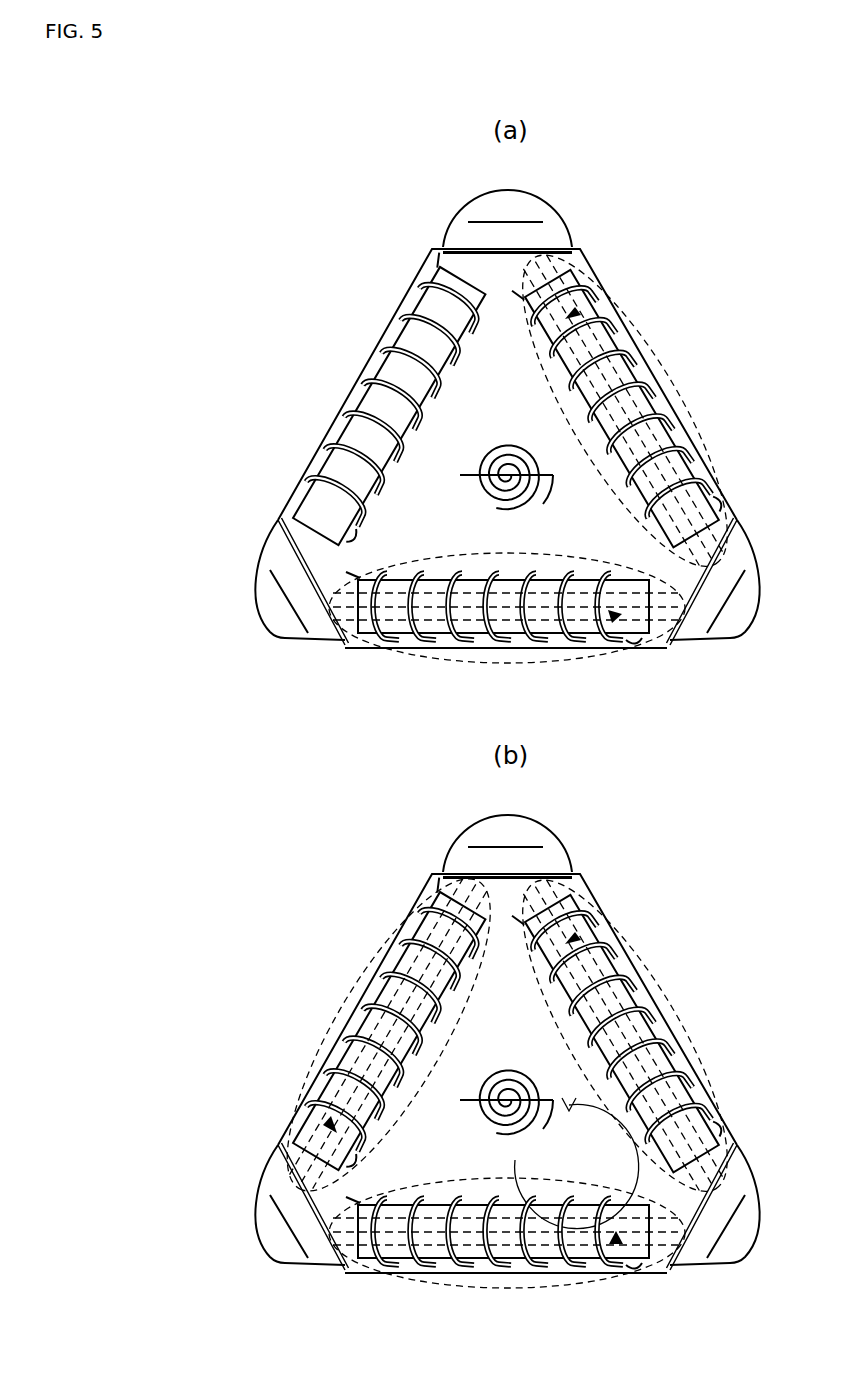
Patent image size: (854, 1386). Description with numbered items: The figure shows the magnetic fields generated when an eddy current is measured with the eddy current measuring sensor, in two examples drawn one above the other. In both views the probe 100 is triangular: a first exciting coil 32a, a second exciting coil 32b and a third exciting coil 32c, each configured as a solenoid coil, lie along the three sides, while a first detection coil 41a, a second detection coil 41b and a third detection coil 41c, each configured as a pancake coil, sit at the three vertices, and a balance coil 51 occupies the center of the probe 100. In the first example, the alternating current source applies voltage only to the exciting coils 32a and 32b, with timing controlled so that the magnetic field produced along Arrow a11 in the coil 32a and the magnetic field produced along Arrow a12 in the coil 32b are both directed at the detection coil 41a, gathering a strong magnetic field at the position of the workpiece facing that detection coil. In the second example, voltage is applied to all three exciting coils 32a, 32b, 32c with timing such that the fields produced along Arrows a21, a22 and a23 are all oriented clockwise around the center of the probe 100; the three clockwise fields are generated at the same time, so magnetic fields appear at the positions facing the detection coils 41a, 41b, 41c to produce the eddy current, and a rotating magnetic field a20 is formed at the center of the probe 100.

The probe 100 is at (653, 240).
The first exciting coil 32a is at (636, 380).
The second exciting coil 32b is at (458, 640).
The third exciting coil 32c is at (360, 398).
The first detection coil 41a is at (715, 625).
The second detection coil 41b is at (298, 622).
The third detection coil 41c is at (490, 220).
The balance coil 51 is at (478, 503).
The magnetic field direction in first exciting coil a11 is at (625, 410).
The magnetic field direction in second exciting coil a12 is at (645, 632).
The rotating magnetic field a20 is at (563, 1123).
The magnetic field direction in first exciting coil (second example) a21 is at (625, 1035).
The magnetic field direction in second exciting coil (second example) a22 is at (368, 1273).
The magnetic field direction in third exciting coil (second example) a23 is at (413, 900).